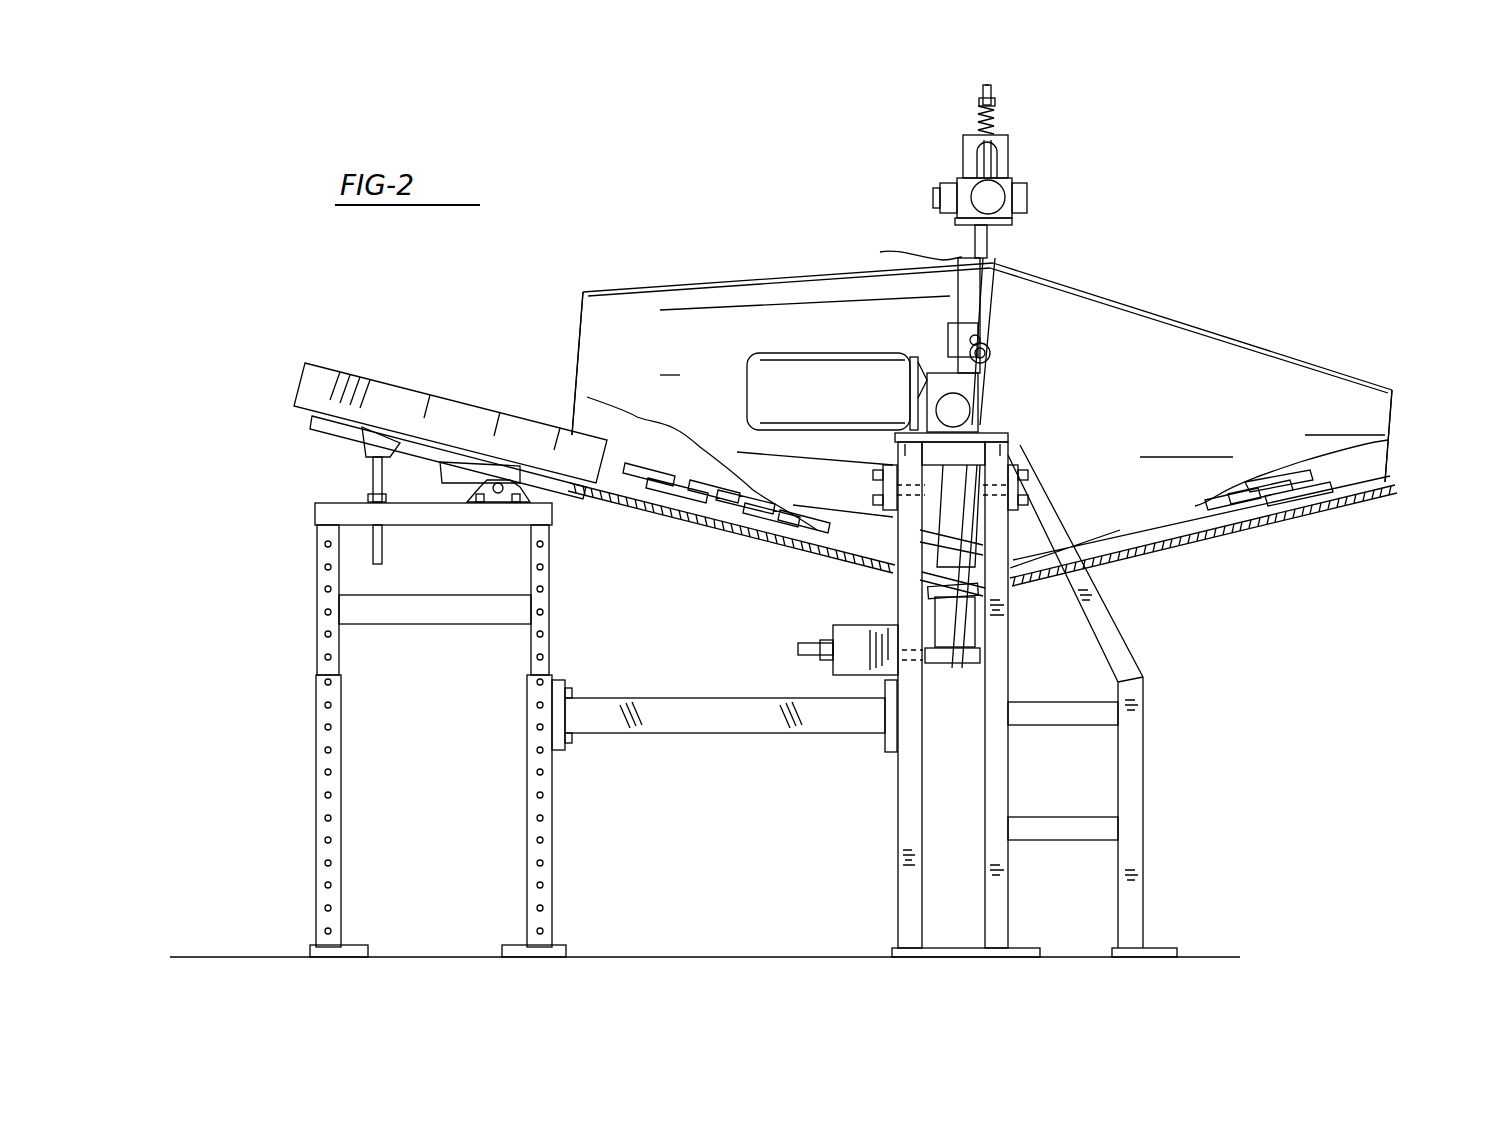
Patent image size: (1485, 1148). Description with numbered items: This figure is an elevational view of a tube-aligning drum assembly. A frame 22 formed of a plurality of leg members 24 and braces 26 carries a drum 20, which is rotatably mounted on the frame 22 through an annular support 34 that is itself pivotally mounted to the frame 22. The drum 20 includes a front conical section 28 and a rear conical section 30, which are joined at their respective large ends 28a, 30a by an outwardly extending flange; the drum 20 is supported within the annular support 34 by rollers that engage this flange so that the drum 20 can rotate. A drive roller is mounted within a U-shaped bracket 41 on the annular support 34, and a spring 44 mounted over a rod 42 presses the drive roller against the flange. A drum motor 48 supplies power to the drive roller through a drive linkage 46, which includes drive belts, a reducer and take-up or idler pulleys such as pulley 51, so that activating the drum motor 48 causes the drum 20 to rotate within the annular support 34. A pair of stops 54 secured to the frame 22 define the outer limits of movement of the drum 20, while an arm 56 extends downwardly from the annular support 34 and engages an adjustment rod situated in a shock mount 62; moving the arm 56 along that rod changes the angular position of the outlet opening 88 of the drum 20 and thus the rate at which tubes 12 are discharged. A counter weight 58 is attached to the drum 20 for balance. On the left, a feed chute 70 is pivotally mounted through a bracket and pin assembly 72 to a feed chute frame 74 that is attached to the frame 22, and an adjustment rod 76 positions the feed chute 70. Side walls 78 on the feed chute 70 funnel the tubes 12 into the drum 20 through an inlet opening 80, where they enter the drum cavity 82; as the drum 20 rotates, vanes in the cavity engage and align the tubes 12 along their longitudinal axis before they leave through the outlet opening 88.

The tubes 12 is at (700, 500).
The drum 20 is at (1190, 322).
The frame 22 is at (1015, 695).
The leg members 24 is at (1140, 790).
The braces 26 is at (1130, 650).
The front conical section 28 is at (1265, 372).
The large end of front conical section 28a is at (1040, 292).
The rear conical section 30 is at (668, 300).
The large end of rear conical section 30a is at (902, 239).
The annular support 34 is at (995, 260).
The U-shaped bracket 41 is at (962, 160).
The rod 42 is at (995, 95).
The spring 44 is at (1000, 130).
The drive linkage 46 is at (1045, 192).
The drum motor 48 is at (782, 358).
The take-up or idler pulley 51 is at (948, 333).
The stops 54 is at (985, 490).
The arm 56 is at (1010, 195).
The counter weight 58 is at (968, 625).
The shock mount 62 is at (850, 665).
The feed chute 70 is at (325, 362).
The bracket and pin assembly 72 is at (530, 483).
The feed chute frame 74 is at (318, 638).
The adjustment rod 76 is at (372, 487).
The side walls 78 is at (415, 405).
The inlet opening 80 is at (580, 332).
The drum cavity 82 is at (1375, 457).
The outlet opening 88 is at (1395, 422).